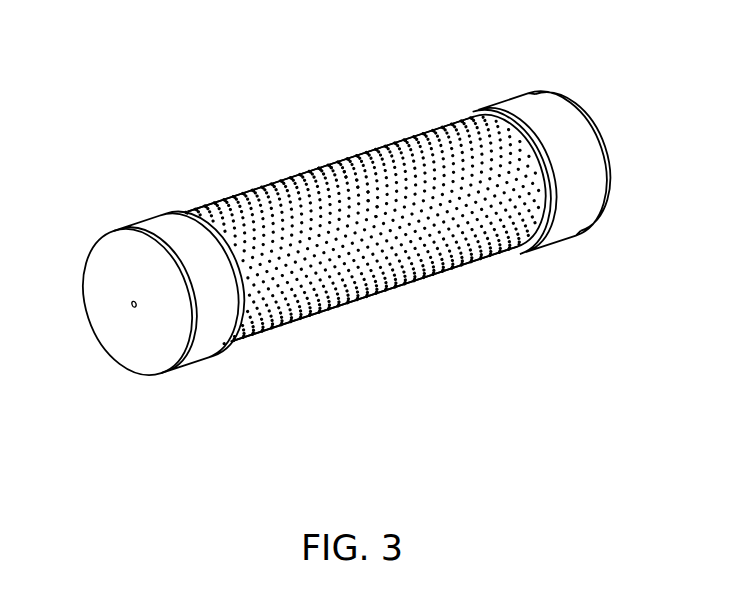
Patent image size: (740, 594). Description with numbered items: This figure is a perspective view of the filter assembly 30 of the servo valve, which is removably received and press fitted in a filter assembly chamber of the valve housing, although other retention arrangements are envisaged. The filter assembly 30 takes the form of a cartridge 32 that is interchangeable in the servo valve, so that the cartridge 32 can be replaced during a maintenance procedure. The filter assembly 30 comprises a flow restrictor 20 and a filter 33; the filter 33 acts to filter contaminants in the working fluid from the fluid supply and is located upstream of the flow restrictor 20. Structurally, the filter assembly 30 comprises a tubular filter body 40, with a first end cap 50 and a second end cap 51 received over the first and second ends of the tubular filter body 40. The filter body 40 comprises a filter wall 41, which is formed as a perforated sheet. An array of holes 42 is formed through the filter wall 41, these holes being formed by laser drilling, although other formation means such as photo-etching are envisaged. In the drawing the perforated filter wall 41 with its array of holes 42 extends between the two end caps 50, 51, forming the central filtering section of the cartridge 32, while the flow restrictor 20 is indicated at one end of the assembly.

The filter assembly 30 is at (157, 118).
The flow restrictor 20 is at (142, 333).
The first end cap 50 is at (185, 368).
The second end cap 51 is at (571, 231).
The filter body 40 is at (445, 264).
The filter wall 41 is at (402, 158).
The filter 33 is at (335, 184).
The array of holes 42 is at (356, 282).
The cartridge 32 is at (289, 378).